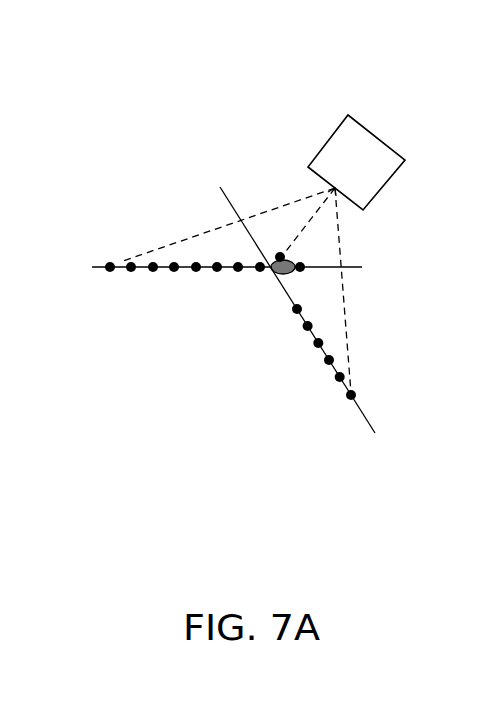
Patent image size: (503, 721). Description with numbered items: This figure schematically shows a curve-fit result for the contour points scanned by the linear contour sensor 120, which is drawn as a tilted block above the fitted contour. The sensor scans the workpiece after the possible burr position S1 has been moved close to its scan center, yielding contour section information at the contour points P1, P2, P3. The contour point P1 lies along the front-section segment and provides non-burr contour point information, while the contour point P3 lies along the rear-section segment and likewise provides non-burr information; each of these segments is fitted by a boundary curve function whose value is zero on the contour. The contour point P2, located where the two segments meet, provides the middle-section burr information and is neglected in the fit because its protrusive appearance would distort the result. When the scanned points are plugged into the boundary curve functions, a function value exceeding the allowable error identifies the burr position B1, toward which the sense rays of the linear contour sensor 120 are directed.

The linear contour sensor 120 is at (373, 137).
The contour point P1 is at (152, 273).
The contour point P2 is at (277, 252).
The contour point P3 is at (325, 365).
The burr position B1 is at (314, 245).
The possible burr position S1 is at (285, 314).